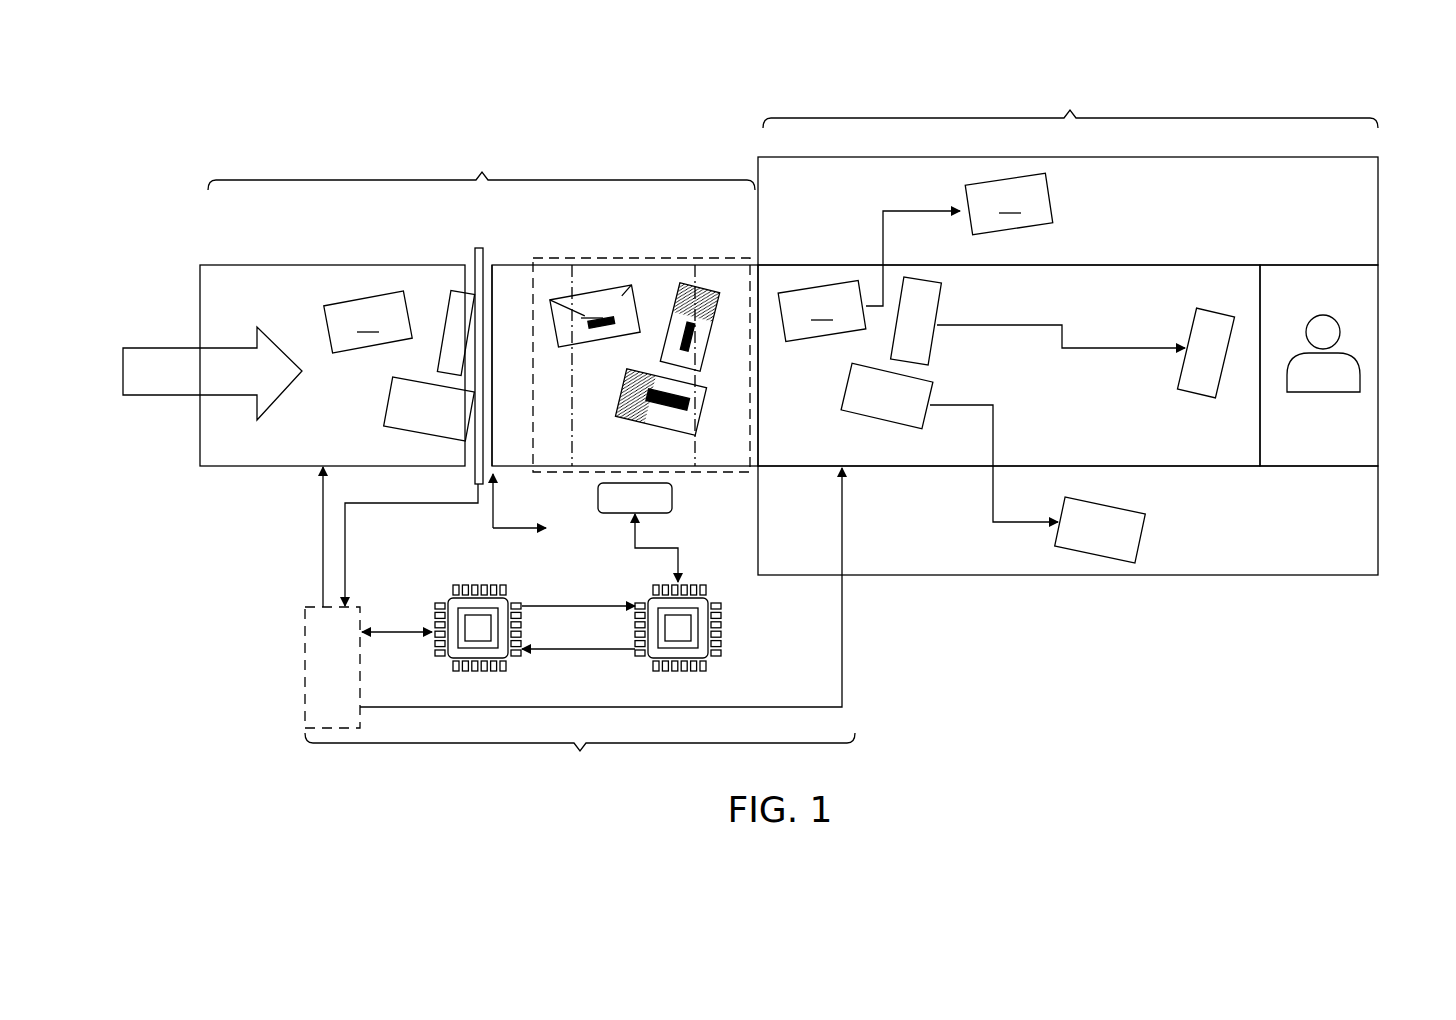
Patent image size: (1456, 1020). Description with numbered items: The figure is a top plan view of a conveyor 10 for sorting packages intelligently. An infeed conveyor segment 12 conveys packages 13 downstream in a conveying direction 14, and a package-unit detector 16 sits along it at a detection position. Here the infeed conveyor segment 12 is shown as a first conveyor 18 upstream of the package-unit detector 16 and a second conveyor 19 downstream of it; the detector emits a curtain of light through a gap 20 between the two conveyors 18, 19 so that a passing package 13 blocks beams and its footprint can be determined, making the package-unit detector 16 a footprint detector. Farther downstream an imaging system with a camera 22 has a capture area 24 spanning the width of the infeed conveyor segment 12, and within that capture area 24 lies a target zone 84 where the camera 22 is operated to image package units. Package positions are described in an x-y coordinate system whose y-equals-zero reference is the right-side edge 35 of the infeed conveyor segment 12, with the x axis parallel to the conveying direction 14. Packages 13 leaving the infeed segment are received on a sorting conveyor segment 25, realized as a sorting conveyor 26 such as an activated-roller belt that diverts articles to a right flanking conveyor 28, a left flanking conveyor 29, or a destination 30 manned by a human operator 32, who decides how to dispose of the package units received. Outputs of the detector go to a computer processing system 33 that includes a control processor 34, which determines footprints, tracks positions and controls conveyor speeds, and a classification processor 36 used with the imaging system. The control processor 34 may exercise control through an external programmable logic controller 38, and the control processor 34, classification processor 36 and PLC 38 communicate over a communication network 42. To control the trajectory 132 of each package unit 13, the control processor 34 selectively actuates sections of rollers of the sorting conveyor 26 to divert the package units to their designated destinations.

The conveyor 10 is at (364, 82).
The infeed conveyor segment 12 is at (481, 162).
The packages 13 is at (735, 368).
The conveying direction 14 is at (143, 352).
The package-unit detector 16 is at (480, 247).
The first conveyor 18 is at (243, 278).
The second conveyor 19 is at (507, 277).
The gap 20 is at (493, 258).
The camera 22 is at (663, 501).
The capture area 24 is at (632, 258).
The sorting conveyor segment 25 is at (1070, 102).
The sorting conveyor 26 is at (1065, 406).
The right flanking conveyor 28 is at (1180, 565).
The left flanking conveyor 29 is at (1143, 175).
The destination 30 is at (1354, 429).
The human operator 32 is at (1345, 367).
The computer processing system 33 is at (580, 759).
The control processor 34 is at (457, 606).
The right-side edge 35 is at (518, 468).
The classification processor 36 is at (698, 645).
The programmable logic controller 38 is at (312, 604).
The communication network 42 is at (398, 635).
The target zone 84 is at (582, 252).
The trajectory 132 is at (935, 211).